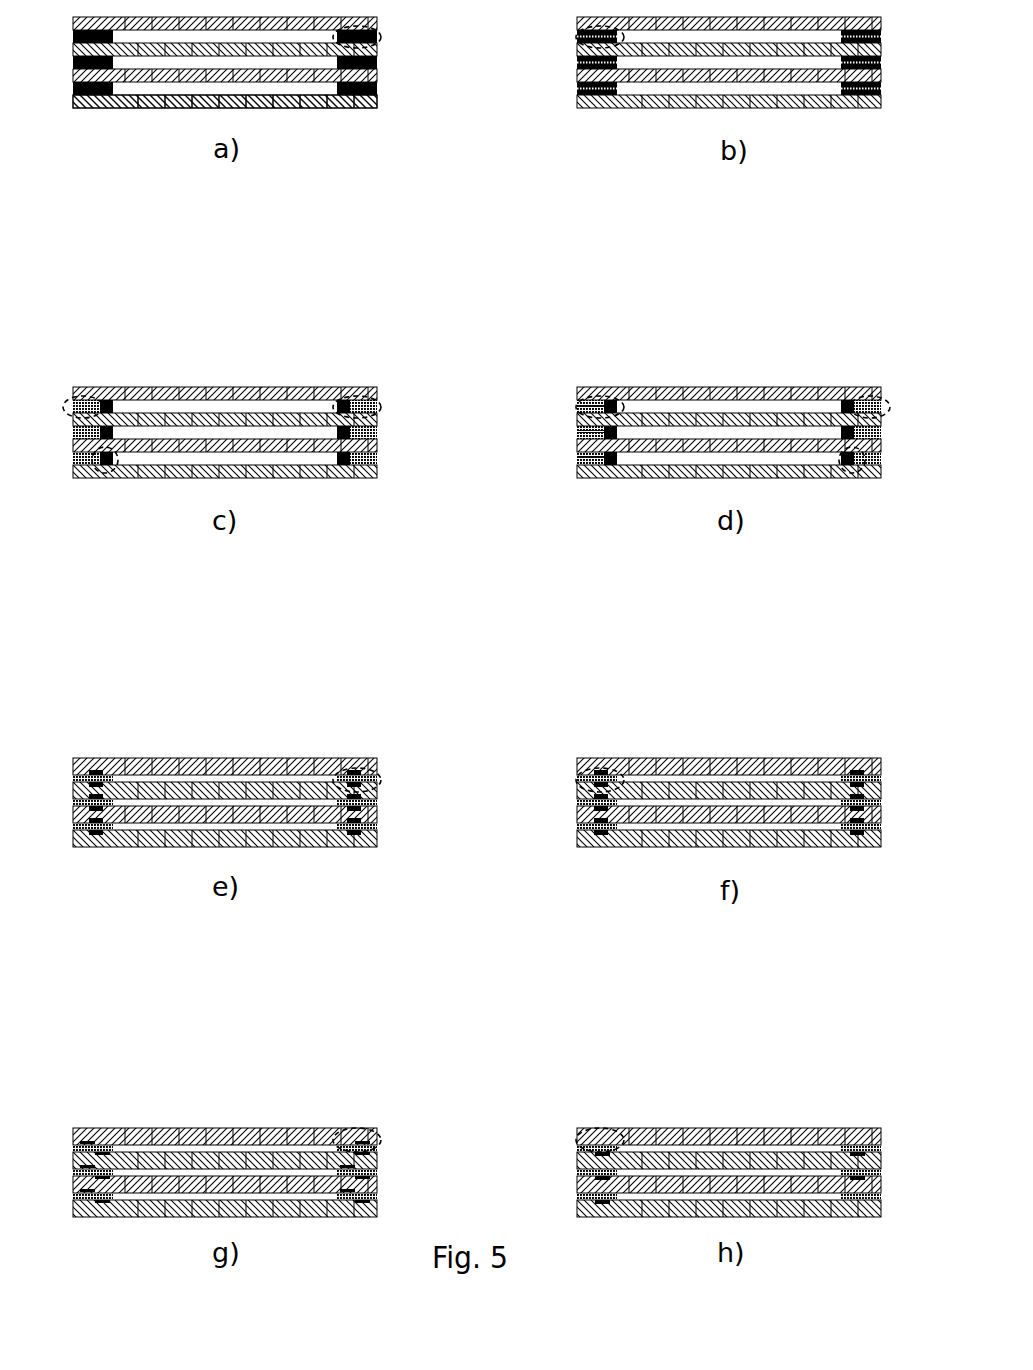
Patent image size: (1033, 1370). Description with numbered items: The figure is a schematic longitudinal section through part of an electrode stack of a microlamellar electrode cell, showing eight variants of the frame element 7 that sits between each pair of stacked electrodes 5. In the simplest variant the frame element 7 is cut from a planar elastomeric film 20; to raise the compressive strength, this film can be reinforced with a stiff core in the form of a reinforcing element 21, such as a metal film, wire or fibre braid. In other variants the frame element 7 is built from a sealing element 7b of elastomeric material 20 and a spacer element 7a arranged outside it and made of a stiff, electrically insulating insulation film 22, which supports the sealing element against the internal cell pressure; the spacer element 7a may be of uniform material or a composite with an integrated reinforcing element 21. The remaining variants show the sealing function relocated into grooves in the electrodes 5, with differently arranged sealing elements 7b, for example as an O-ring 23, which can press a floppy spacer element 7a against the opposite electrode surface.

The electrode 5 is at (306, 109).
The frame element 7 is at (380, 37).
The spacer element 7a is at (83, 393).
The sealing element 7b is at (104, 474).
The elastomeric film 20 is at (378, 90).
The reinforcing element 21 is at (579, 86).
The insulation film 22 is at (366, 461).
The O-ring 23 is at (357, 842).